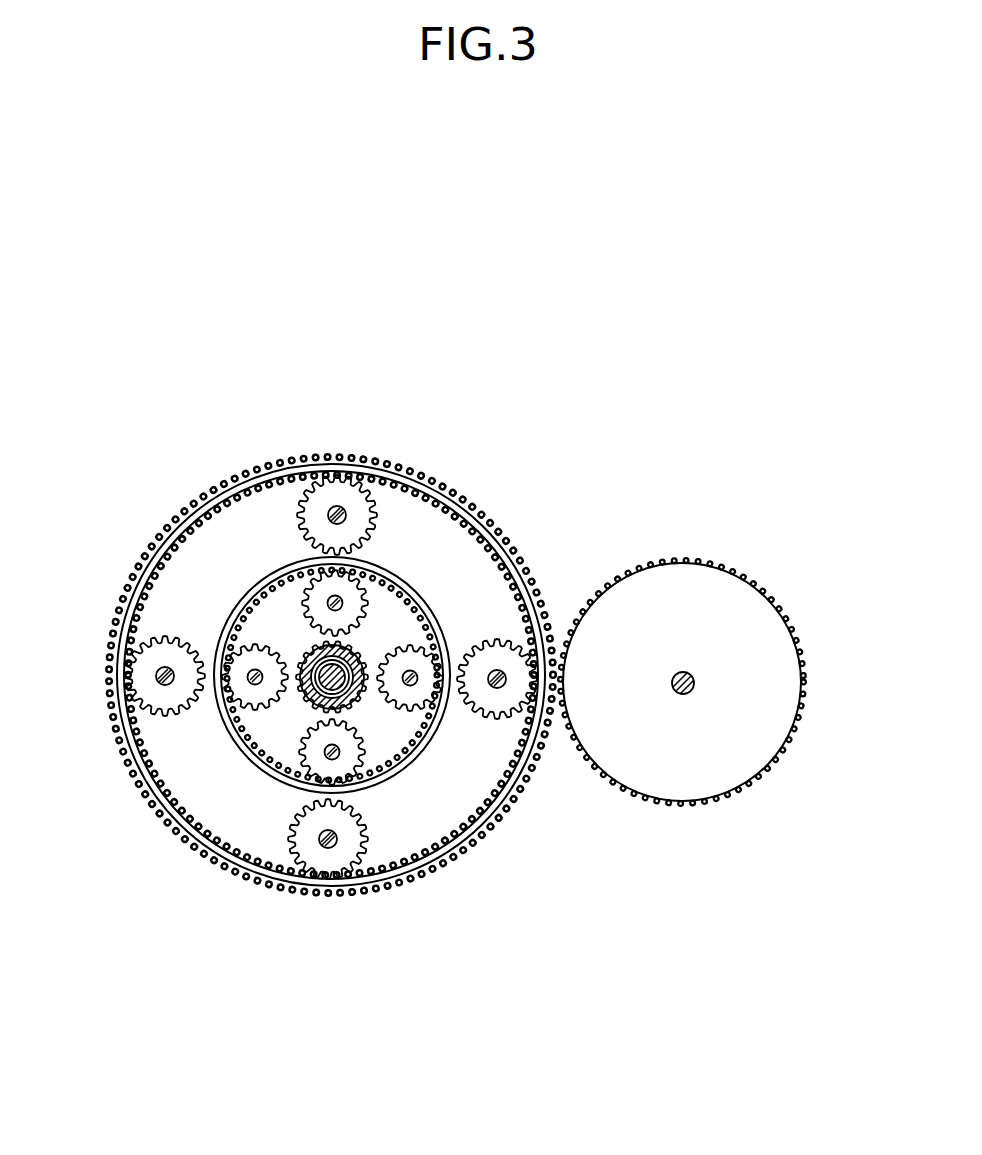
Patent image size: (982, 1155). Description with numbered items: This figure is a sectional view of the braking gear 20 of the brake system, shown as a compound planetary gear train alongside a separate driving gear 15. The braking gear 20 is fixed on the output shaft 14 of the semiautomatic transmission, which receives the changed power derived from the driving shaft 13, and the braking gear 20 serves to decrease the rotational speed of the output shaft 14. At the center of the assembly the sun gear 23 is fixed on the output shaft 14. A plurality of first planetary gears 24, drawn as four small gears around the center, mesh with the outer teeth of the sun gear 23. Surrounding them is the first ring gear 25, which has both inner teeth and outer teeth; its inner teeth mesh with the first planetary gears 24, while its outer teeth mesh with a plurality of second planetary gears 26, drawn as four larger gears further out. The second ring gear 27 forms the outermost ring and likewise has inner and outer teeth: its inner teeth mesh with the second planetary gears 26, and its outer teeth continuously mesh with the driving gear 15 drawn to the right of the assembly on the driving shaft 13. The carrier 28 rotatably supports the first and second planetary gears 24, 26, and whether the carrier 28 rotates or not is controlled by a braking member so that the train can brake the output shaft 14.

The driving shaft 13 is at (685, 672).
The output shaft 14 is at (353, 647).
The driving gear 15 is at (773, 598).
The braking gear 20 is at (608, 398).
The sun gear 23 is at (362, 662).
The first planetary gears 24 is at (425, 703).
The first ring gear 25 is at (257, 768).
The second planetary gears 26 is at (305, 528).
The second ring gear 27 is at (340, 462).
The carrier 28 is at (398, 847).